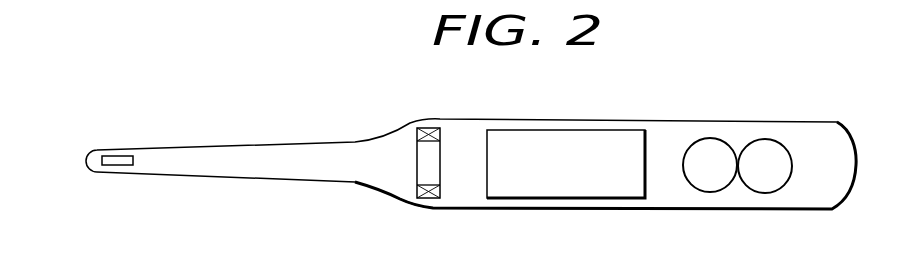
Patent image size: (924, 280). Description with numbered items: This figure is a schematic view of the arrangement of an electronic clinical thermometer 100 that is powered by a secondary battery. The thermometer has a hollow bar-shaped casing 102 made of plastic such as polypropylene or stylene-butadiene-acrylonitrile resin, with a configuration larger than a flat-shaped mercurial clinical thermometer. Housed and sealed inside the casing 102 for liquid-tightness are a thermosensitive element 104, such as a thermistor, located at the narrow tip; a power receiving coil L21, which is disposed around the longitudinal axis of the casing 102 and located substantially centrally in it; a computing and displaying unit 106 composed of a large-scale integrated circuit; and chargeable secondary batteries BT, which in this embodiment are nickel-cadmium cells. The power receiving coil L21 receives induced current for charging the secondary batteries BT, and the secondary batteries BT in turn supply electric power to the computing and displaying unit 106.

The electronic clinical thermometer 100 is at (383, 122).
The casing 102 is at (855, 182).
The thermosensitive element 104 is at (127, 166).
The power receiving coil L21 is at (440, 133).
The computing and displaying unit 106 is at (638, 130).
The secondary batteries BT is at (763, 142).